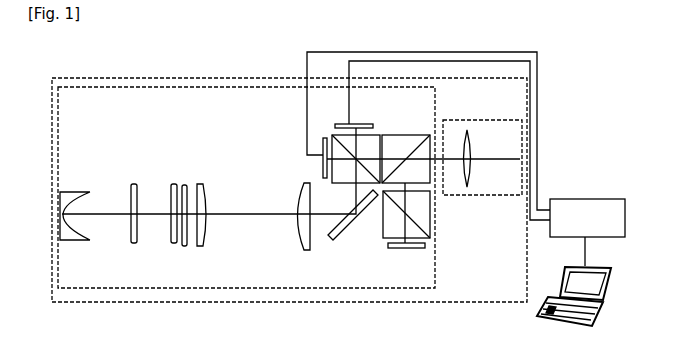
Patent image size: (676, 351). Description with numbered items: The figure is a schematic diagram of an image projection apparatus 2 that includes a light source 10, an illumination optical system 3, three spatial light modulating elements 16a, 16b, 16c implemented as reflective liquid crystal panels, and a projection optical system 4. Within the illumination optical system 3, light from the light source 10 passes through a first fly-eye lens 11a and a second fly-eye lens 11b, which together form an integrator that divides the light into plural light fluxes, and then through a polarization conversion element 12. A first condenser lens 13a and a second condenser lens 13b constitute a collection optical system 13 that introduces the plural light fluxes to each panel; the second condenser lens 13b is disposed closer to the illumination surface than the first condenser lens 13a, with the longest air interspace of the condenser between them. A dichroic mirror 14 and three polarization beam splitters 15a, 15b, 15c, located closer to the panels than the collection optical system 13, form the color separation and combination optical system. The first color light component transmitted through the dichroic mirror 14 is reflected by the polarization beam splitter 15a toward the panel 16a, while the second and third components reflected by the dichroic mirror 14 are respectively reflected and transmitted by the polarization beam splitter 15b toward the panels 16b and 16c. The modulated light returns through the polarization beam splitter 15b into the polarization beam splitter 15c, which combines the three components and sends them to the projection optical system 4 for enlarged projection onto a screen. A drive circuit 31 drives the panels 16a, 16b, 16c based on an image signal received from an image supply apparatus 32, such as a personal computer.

The image projection apparatus 2 is at (427, 302).
The illumination optical system 3 is at (436, 210).
The projection optical system 4 is at (449, 120).
The light source 10 is at (66, 191).
The first fly-eye lens 11a is at (133, 184).
The second fly-eye lens 11b is at (173, 184).
The polarization conversion element 12 is at (185, 246).
The collection optical system 13 is at (253, 237).
The first condenser lens 13a is at (203, 246).
The second condenser lens 13b is at (293, 226).
The dichroic mirror 14 is at (347, 228).
The polarization beam splitter 15a is at (383, 230).
The polarization beam splitter 15b is at (342, 183).
The polarization beam splitter 15c is at (397, 133).
The spatial light modulating element 16a is at (398, 248).
The spatial light modulating element 16b is at (307, 155).
The spatial light modulating element 16c is at (359, 123).
The drive circuit 31 is at (584, 198).
The image supply apparatus 32 is at (558, 323).